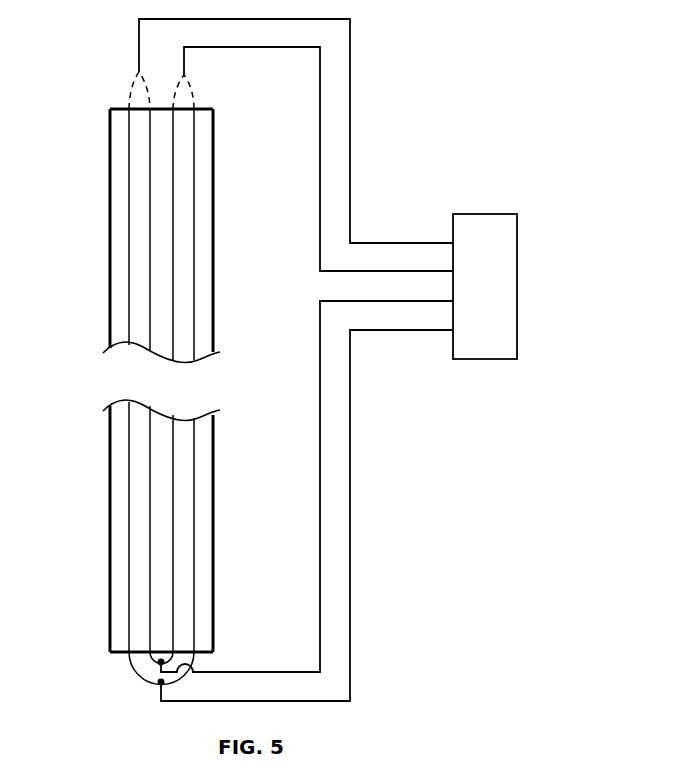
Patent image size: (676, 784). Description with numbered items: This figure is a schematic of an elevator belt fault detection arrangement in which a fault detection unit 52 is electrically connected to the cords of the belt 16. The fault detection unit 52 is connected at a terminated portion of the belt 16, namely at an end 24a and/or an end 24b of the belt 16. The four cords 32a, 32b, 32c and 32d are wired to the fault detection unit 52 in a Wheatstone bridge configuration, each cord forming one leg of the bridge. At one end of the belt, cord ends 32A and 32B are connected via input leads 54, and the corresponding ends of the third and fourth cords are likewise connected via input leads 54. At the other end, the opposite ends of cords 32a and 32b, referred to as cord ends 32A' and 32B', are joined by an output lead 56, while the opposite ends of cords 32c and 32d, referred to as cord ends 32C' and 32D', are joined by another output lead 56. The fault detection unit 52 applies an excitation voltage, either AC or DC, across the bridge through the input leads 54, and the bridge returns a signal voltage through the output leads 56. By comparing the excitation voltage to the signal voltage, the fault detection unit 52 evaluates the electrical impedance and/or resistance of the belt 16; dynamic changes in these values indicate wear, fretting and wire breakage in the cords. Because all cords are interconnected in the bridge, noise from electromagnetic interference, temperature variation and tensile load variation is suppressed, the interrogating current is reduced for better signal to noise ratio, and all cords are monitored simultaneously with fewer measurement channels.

The belt 16 is at (110, 443).
The end of the belt 24a is at (122, 109).
The end of the belt 24b is at (117, 653).
The cord end 32A is at (86, 147).
The cord end 32B is at (106, 159).
The cord 32a is at (127, 257).
The cord 32b is at (148, 298).
The cord 32c is at (195, 110).
The cord 32d is at (173, 110).
The cord end 32A' is at (84, 634).
The cord end 32B' is at (106, 604).
The cord end 32C' is at (217, 604).
The cord end 32D' is at (243, 636).
The fault detection unit 52 is at (505, 213).
The input leads 54 is at (136, 77).
The output lead 56 is at (148, 676).